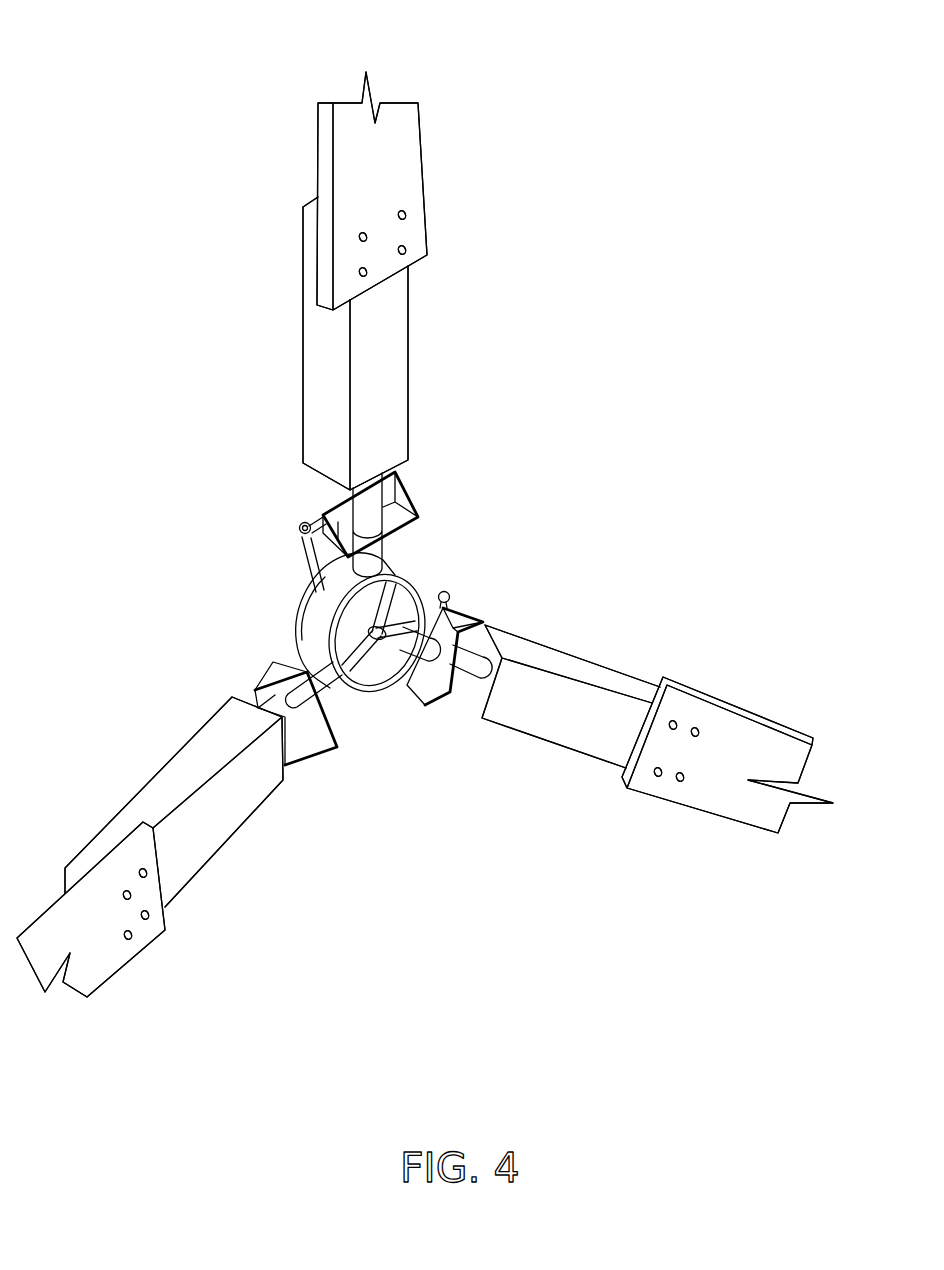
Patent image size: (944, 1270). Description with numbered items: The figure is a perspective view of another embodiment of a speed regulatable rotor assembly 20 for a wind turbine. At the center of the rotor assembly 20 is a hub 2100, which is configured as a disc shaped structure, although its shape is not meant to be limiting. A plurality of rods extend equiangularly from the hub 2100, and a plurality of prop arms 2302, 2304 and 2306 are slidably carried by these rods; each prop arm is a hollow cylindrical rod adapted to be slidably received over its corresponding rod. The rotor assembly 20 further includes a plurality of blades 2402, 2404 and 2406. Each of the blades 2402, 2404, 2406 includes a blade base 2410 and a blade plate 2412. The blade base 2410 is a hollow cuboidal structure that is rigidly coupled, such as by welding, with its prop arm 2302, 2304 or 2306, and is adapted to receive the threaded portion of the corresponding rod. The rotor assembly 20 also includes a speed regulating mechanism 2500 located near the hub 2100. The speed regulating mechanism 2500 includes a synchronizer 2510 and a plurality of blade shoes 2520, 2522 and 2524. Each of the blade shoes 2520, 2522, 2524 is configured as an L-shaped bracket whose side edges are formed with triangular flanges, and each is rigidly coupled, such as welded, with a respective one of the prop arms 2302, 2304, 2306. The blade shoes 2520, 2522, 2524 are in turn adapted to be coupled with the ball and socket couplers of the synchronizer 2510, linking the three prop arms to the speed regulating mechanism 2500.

The rotor assembly 20 is at (721, 76).
The hub 2100 is at (313, 622).
The prop arm 2302 is at (368, 518).
The prop arm 2304 is at (330, 693).
The prop arm 2306 is at (463, 697).
The blade 2402 is at (290, 323).
The blade 2404 is at (139, 769).
The blade 2406 is at (640, 662).
The blade base 2410 is at (395, 372).
The blade plate 2412 is at (402, 173).
The speed regulating mechanism 2500 is at (292, 565).
The synchronizer 2510 is at (302, 522).
The blade shoe 2520 is at (408, 493).
The blade shoe 2522 is at (270, 678).
The blade shoe 2524 is at (470, 612).